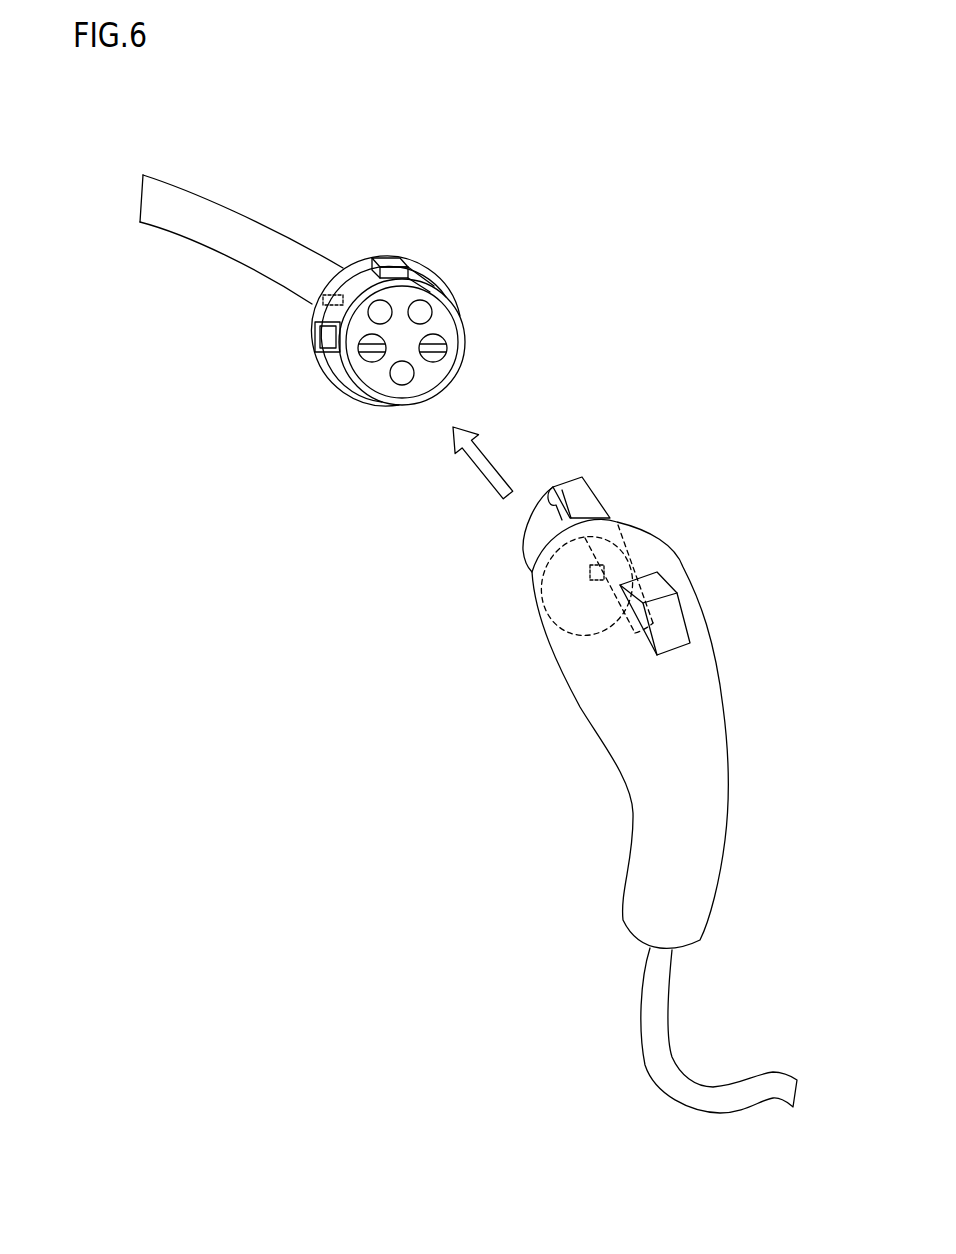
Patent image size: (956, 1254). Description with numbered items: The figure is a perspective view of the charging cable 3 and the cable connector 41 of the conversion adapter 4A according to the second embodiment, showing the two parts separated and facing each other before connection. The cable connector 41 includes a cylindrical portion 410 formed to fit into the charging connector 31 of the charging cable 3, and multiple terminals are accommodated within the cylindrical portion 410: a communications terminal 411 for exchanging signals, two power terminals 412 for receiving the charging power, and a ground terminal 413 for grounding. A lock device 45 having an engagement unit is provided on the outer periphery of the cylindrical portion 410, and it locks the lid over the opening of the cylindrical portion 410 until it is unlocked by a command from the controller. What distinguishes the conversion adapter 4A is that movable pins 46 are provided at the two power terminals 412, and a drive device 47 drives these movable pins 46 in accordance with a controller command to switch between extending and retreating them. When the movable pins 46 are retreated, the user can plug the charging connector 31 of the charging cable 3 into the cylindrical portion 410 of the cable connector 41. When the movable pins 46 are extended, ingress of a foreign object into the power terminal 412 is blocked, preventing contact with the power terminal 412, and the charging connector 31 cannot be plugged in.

The conversion adapter 4A is at (482, 200).
The cable connector 41 is at (405, 254).
The cylindrical portion 410 is at (422, 278).
The communications terminal 411 is at (427, 311).
The drive device 47 is at (322, 301).
The lock device 45 is at (320, 338).
The movable pins 46 is at (362, 349).
The power terminal 412 is at (371, 361).
The ground terminal 413 is at (400, 374).
The charging cable 3 is at (737, 638).
The charging connector 31 is at (614, 521).